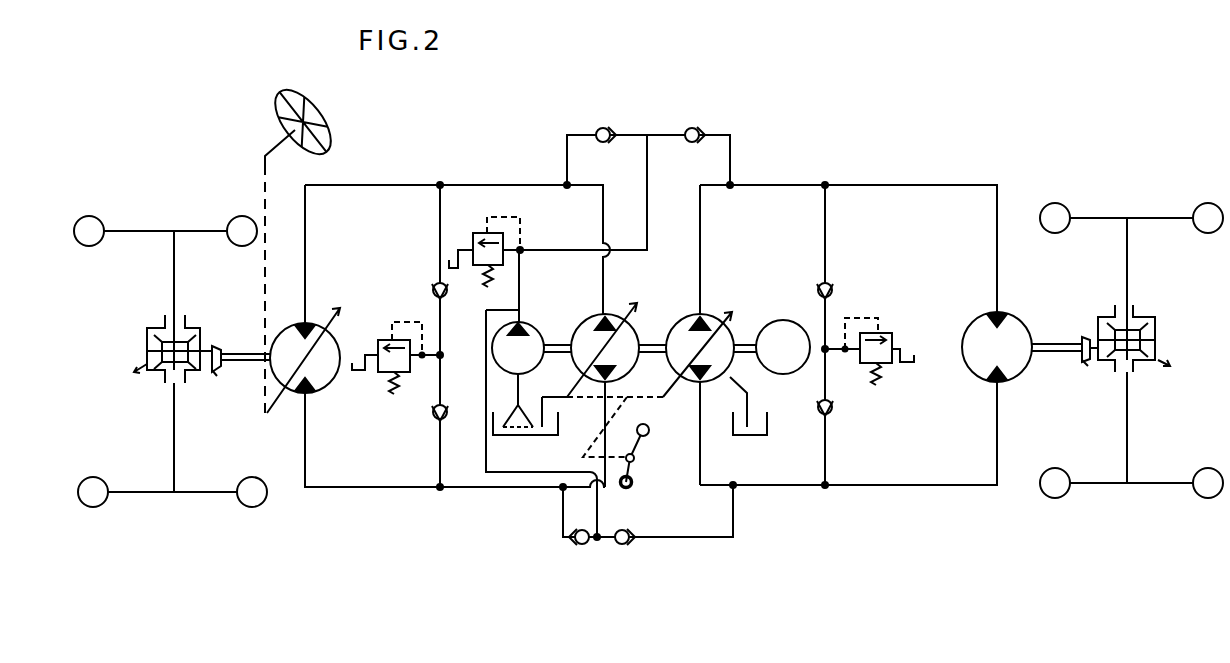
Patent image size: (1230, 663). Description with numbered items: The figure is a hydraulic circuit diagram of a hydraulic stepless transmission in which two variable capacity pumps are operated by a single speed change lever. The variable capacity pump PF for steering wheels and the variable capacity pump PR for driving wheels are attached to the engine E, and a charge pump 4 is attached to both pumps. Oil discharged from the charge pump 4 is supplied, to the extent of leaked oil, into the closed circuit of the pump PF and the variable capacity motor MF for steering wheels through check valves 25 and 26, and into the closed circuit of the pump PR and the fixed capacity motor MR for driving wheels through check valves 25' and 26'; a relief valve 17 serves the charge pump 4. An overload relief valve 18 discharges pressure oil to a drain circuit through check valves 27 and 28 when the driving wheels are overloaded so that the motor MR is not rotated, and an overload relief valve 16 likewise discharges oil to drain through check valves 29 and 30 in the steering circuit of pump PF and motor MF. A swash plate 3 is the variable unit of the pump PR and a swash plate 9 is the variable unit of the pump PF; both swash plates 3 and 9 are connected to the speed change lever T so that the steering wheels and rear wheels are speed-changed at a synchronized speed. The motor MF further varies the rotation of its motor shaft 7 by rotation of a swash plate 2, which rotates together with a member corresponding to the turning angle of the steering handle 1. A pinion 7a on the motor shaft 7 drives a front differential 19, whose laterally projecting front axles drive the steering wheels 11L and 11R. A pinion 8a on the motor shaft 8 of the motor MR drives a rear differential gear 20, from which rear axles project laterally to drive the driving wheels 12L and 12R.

The steering handle 1 is at (330, 128).
The swash plate 2 is at (342, 313).
The swash plate 3 is at (731, 310).
The charge pump 4 is at (538, 323).
The motor shaft 7 is at (252, 350).
The pinion 7a is at (213, 340).
The motor shaft 8 is at (1063, 340).
The pinion 8a is at (1087, 330).
The swash plate 9 is at (622, 306).
The steering wheel 11R is at (143, 229).
The steering wheel 11L is at (150, 497).
The driving wheel 12R is at (1110, 216).
The driving wheel 12L is at (1110, 497).
The overload relief valve 16 is at (385, 332).
The relief valve 17 is at (478, 233).
The overload relief valve 18 is at (891, 330).
The front differential 19 is at (127, 336).
The rear differential gear 20 is at (1169, 324).
The check valve 25 is at (611, 156).
The check valve 26 is at (686, 156).
The check valve 25' is at (585, 559).
The check valve 26' is at (634, 559).
The check valve 27 is at (834, 290).
The check valve 28 is at (832, 412).
The check valve 29 is at (448, 290).
The check valve 30 is at (447, 415).
The variable capacity motor for steering wheels MF is at (333, 387).
The fixed capacity motor for driving wheels MR is at (1022, 374).
The variable capacity pump for steering wheels PF is at (643, 408).
The variable capacity pump for driving wheels PR is at (678, 437).
The speed change lever T is at (645, 462).
The engine E is at (772, 347).